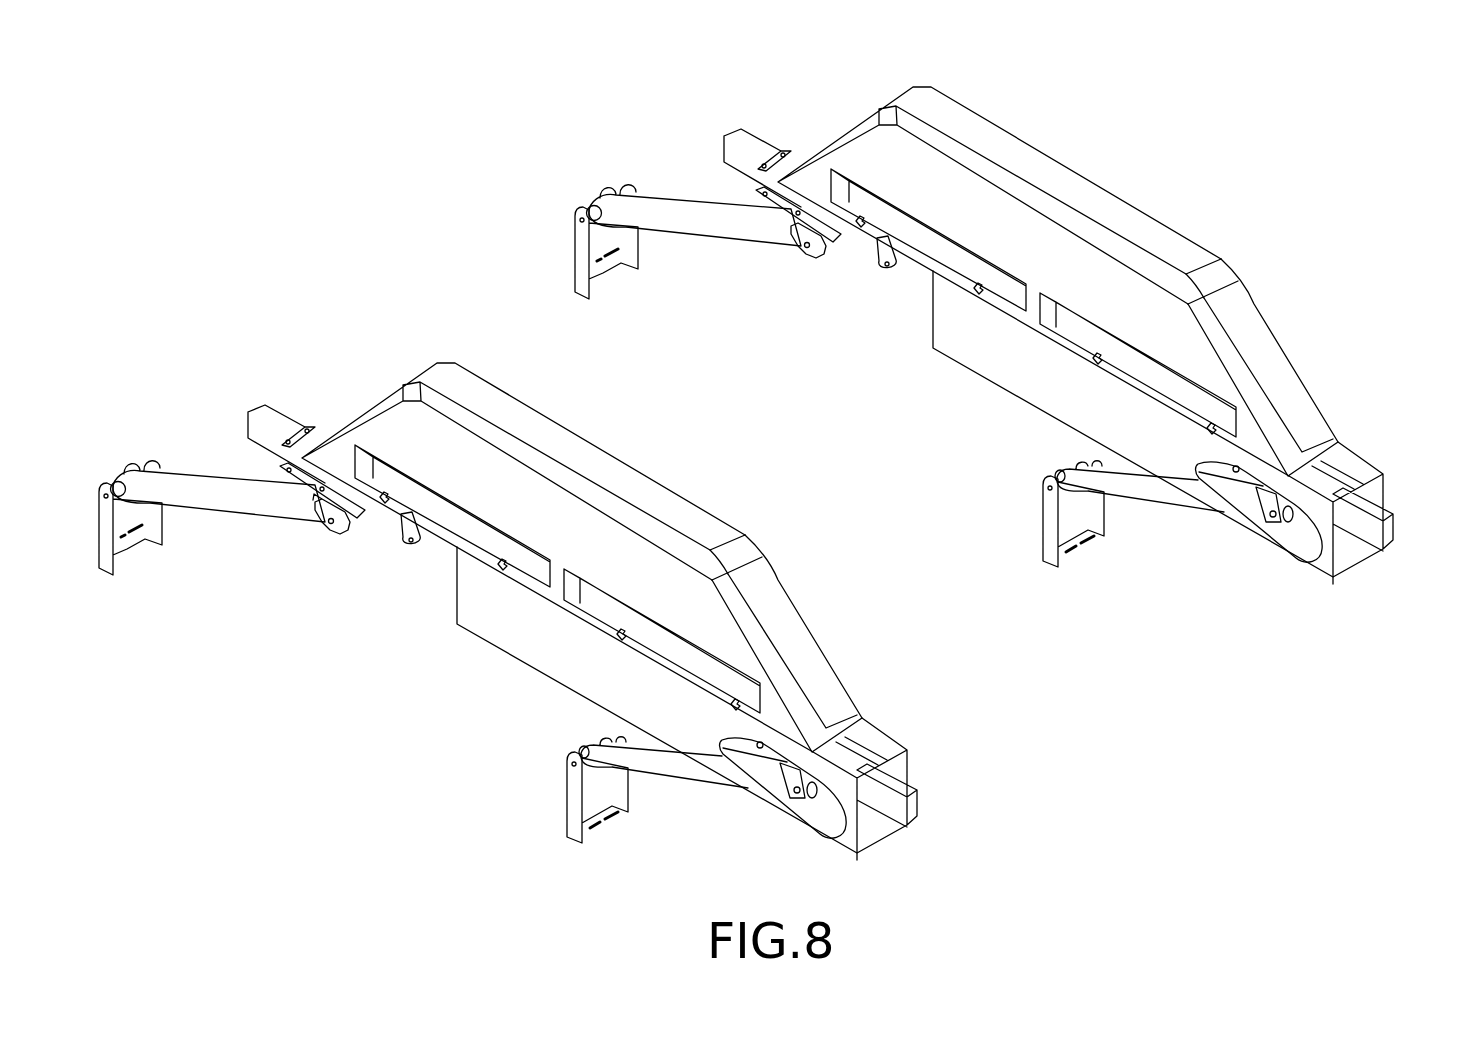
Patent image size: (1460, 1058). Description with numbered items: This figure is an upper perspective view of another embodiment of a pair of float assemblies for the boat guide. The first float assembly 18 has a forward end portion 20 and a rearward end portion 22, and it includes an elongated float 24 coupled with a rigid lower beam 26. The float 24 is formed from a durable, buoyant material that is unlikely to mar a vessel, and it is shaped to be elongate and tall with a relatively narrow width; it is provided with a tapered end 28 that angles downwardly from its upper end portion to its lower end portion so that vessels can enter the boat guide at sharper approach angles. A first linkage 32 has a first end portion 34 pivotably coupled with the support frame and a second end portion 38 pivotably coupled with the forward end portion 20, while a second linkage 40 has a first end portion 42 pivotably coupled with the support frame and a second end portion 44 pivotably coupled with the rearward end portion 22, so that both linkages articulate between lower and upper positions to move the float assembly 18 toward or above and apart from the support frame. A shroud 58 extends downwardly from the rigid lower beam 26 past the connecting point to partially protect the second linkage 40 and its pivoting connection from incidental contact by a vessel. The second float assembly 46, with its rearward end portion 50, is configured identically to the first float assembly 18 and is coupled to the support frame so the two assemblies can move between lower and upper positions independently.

The float assembly 18 is at (423, 735).
The forward end portion 20 is at (272, 409).
The rearward end portion 22 is at (915, 779).
The elongated float 24 is at (492, 482).
The rigid lower beam 26 is at (432, 542).
The tapered end 28 is at (774, 623).
The first linkage 32 is at (226, 506).
The first end portion 34 is at (350, 537).
The second end portion 38 is at (109, 479).
The second linkage 40 is at (665, 770).
The first end portion 42 is at (566, 770).
The second end portion 44 is at (822, 805).
The second float assembly 46 is at (1192, 186).
The rearward end portion 50 is at (1368, 463).
The shroud 58 is at (553, 672).